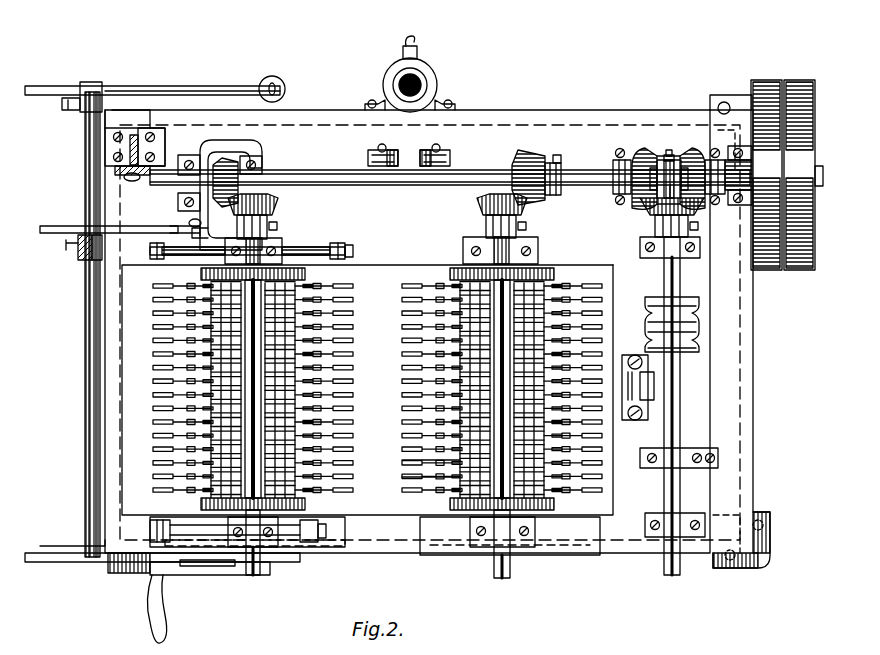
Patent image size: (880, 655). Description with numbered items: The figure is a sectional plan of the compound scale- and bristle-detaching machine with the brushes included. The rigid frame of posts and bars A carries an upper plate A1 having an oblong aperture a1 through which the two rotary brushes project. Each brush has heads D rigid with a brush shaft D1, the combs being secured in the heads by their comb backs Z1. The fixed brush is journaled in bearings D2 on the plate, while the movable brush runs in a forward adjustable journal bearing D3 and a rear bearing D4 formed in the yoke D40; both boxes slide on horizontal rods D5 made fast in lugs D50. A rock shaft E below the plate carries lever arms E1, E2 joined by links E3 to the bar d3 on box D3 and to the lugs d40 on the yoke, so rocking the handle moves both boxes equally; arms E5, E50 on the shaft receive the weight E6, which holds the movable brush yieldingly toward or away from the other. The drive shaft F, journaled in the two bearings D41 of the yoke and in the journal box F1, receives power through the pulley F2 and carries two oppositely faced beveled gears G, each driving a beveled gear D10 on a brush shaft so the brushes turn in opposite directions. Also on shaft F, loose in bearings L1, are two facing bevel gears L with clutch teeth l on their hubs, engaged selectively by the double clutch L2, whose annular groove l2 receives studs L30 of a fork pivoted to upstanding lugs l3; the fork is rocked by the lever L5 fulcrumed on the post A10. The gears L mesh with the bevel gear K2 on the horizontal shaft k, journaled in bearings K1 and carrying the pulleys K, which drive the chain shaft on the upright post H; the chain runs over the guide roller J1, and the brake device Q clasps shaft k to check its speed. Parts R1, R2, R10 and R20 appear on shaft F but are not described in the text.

The posts and bars of the rigid frame A is at (765, 545).
The upper plate A1 is at (667, 338).
The post A10 is at (108, 163).
The oblong aperture a1 is at (367, 390).
The rock shaft E is at (88, 390).
The lever arm E1 is at (40, 553).
The lever arm E2 is at (78, 245).
The links E3 is at (70, 226).
The lever arm E5 is at (158, 86).
The lever arm E50 is at (52, 86).
The weight E6 is at (282, 77).
The shaft F is at (408, 188).
The journal box F1 is at (738, 148).
The pulley F2 is at (775, 110).
The beveled gear G is at (528, 150).
The upright post H is at (421, 72).
The collar R1 is at (368, 158).
The collar R2 is at (450, 156).
The set screw R10 is at (382, 145).
The set screw R20 is at (436, 145).
The heads of the rotary brushes D is at (520, 268).
The brush shaft D1 is at (262, 552).
The bearings D2 is at (528, 240).
The adjustable journal bearing D3 is at (285, 548).
The bar d3 is at (212, 566).
The bearing D4 is at (280, 248).
The horizontal rods D5 is at (320, 247).
The lugs D50 is at (352, 245).
The beveled gear D10 is at (278, 208).
The yoke D40 is at (240, 212).
The lugs d40 is at (172, 228).
The bearings D41 is at (186, 156).
The comb back Z1 is at (450, 476).
The bevel gears L is at (636, 200).
The bearings L1 is at (616, 160).
The double clutch L2 is at (674, 165).
The studs L30 is at (668, 150).
The lever L5 is at (118, 178).
The clutch teeth l is at (652, 166).
The annular groove l2 is at (664, 158).
The upstanding lugs l3 is at (668, 160).
The pulleys K is at (650, 345).
The bearings K1 is at (652, 258).
The bevel gear K2 is at (652, 215).
The horizontal shaft k is at (682, 278).
The guide roller J1 is at (652, 385).
The brake device Q is at (686, 460).